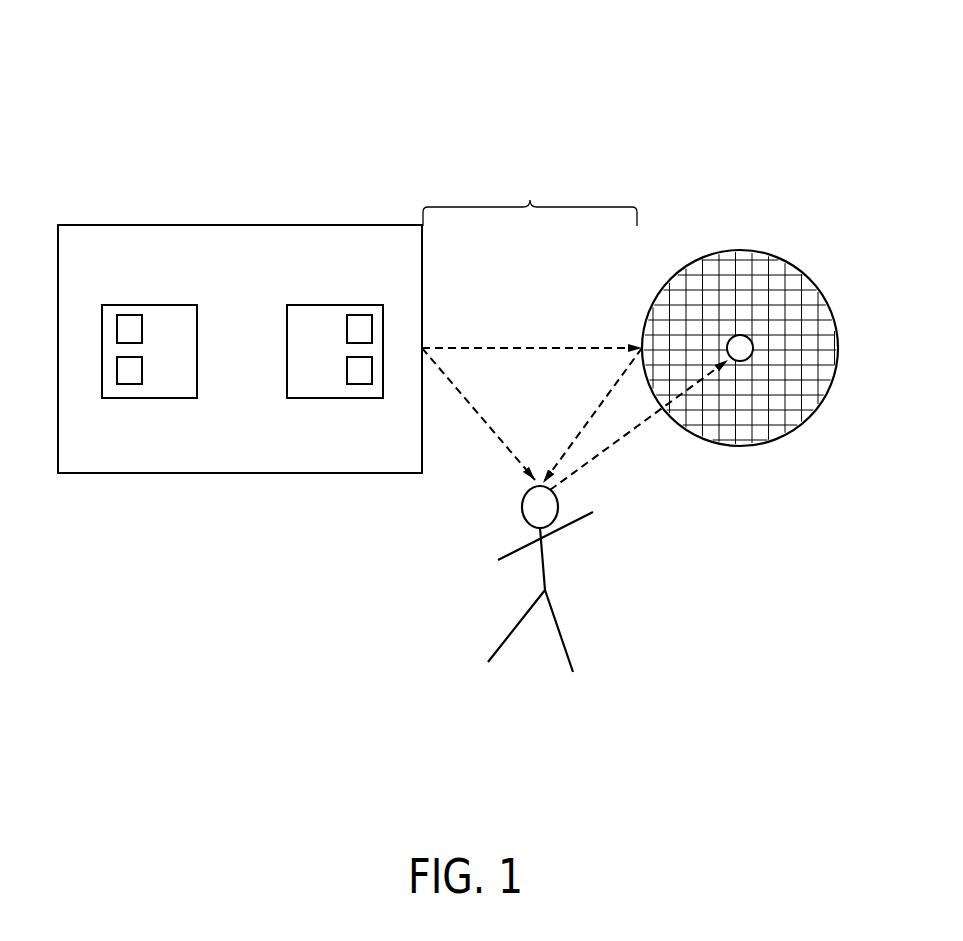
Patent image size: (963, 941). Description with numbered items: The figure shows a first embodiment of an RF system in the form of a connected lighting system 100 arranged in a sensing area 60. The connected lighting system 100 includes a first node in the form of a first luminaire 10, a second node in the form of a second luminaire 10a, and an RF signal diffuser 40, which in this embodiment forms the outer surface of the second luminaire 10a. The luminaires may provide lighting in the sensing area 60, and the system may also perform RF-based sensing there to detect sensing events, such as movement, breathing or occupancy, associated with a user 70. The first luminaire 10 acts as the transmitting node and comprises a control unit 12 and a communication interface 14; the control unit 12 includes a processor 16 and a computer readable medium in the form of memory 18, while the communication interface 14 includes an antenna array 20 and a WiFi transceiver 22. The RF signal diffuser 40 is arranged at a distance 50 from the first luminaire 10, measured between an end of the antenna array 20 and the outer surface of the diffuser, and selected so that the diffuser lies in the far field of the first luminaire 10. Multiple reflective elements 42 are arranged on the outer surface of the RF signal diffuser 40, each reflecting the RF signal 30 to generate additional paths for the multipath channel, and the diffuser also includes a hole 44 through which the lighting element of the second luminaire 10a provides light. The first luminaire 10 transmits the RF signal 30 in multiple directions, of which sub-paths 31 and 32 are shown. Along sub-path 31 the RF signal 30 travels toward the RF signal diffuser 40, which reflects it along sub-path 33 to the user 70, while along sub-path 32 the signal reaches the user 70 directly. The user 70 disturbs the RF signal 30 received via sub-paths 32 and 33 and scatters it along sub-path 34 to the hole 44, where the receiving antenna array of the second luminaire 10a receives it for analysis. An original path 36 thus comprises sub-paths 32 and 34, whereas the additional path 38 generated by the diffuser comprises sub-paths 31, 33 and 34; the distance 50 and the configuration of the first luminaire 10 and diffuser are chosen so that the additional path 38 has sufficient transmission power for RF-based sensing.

The connected lighting system 100 is at (93, 102).
The first luminaire 10 is at (197, 210).
The second luminaire 10a is at (773, 448).
The control unit 12 is at (323, 303).
The communication interface 14 is at (112, 305).
The processor 16 is at (358, 323).
The memory 18 is at (360, 377).
The antenna array 20 is at (128, 323).
The WiFi transceiver 22 is at (132, 377).
The RF signal 30 is at (480, 345).
The sub-path 31 is at (553, 343).
The sub-path 32 is at (493, 440).
The sub-path 33 is at (580, 427).
The sub-path 34 is at (608, 445).
The original path 36 is at (628, 535).
The additional path 38 is at (693, 535).
The RF signal diffuser 40 is at (755, 252).
The reflective elements 42 is at (703, 285).
The hole 44 is at (758, 342).
The distance 50 is at (530, 193).
The sensing area 60 is at (253, 608).
The user 70 is at (500, 530).